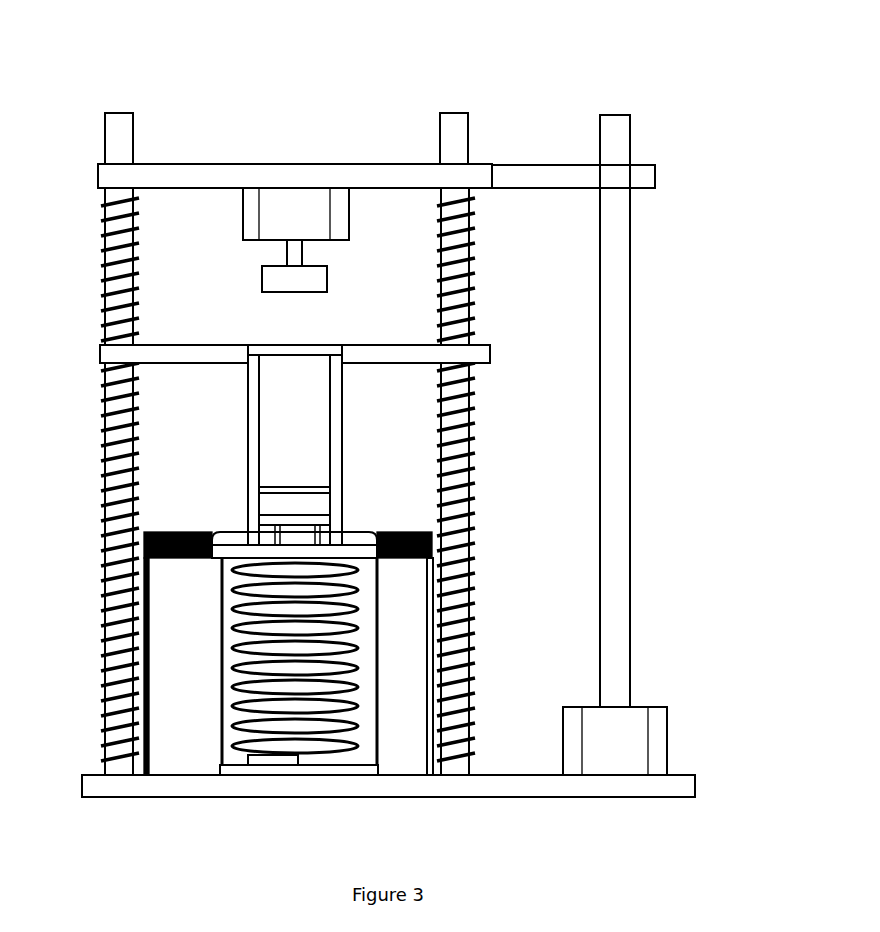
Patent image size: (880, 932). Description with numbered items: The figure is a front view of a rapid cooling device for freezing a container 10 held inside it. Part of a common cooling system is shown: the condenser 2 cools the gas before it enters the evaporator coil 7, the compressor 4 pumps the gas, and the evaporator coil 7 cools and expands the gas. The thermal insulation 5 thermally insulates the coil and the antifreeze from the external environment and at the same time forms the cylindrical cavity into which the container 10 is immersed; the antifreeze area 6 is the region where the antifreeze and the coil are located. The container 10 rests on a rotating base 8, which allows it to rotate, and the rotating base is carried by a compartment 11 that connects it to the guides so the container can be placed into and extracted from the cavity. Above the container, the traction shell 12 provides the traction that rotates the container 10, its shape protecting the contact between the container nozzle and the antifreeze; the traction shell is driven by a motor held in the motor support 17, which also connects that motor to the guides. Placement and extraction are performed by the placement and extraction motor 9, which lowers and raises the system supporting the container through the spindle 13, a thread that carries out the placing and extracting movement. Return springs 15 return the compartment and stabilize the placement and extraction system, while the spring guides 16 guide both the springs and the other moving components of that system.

The condenser 2 is at (150, 566).
The compressor 4 is at (230, 535).
The thermal insulation 5 is at (182, 715).
The antifreeze area 6 is at (230, 755).
The evaporator coil 7 is at (348, 740).
The rotating base 8 is at (262, 518).
The placement and extraction motor 9 is at (620, 757).
The container 10 is at (290, 420).
The compartment 11 is at (388, 357).
The traction shell 12 is at (280, 281).
The spindle 13 is at (618, 367).
The return springs 15 is at (487, 257).
The spring guides 16 is at (448, 113).
The motor support 17 is at (632, 175).